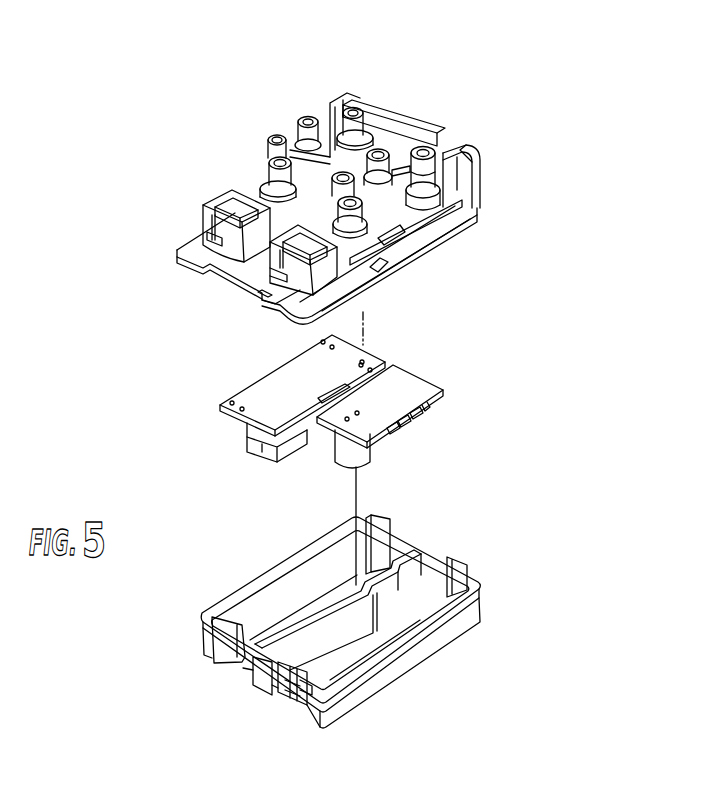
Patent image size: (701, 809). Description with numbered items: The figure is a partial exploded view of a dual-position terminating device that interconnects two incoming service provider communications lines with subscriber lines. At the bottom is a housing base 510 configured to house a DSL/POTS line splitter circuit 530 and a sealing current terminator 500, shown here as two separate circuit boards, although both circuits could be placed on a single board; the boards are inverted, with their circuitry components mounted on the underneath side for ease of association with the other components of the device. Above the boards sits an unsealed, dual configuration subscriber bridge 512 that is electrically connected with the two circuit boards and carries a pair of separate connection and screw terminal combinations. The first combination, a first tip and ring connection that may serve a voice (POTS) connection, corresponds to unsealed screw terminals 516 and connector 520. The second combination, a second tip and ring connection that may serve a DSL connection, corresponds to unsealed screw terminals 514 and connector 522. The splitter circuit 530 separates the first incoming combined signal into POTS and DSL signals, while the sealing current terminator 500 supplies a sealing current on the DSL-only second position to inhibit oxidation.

The sealing current terminator 500 is at (423, 372).
The housing base 510 is at (432, 546).
The subscriber bridge 512 is at (480, 186).
The unsealed screw terminals 514 is at (345, 176).
The unsealed screw terminals 516 is at (352, 100).
The connector 520 is at (220, 193).
The connector 522 is at (262, 298).
The DSL/POTS line splitter circuit 530 is at (250, 376).